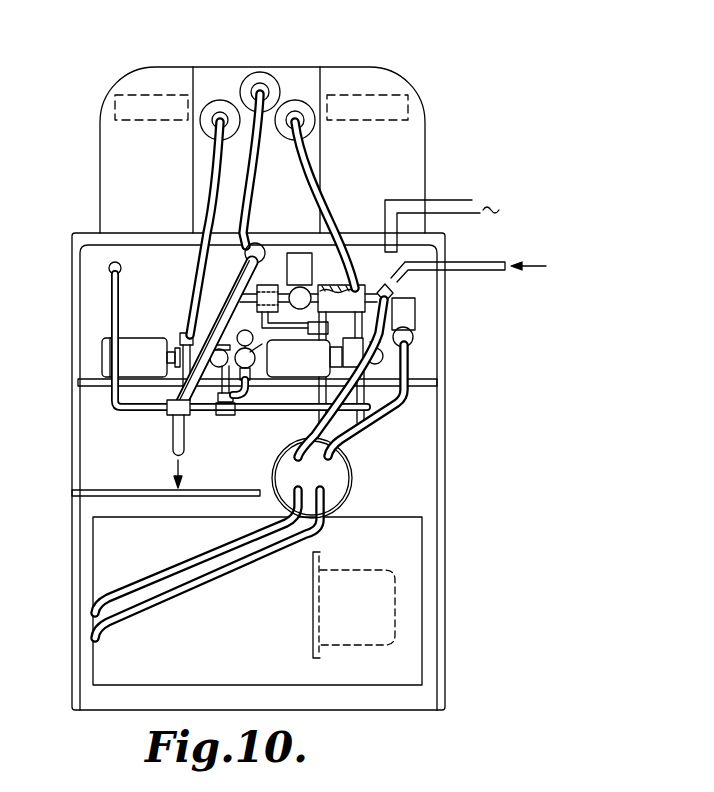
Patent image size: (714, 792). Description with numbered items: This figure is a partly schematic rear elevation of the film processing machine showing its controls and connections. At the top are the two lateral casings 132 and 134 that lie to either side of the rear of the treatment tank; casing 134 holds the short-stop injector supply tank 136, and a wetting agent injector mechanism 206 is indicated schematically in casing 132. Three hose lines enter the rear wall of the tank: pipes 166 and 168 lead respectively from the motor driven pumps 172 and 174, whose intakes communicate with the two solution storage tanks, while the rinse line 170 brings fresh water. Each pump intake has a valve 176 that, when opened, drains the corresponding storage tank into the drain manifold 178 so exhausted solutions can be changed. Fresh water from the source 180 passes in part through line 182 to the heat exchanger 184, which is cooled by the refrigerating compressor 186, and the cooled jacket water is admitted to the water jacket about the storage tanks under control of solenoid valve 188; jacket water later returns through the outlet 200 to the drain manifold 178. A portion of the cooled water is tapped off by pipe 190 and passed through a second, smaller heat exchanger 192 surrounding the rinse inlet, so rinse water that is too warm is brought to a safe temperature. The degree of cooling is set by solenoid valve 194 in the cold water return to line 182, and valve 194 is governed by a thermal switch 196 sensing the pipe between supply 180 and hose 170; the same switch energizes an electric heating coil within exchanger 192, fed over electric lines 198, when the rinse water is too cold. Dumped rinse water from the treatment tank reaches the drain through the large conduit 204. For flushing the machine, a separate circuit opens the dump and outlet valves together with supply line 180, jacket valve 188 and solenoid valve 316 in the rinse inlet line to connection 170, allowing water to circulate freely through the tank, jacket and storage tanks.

The lateral casing 132 is at (426, 126).
The lateral casing 134 is at (100, 133).
The supply tank 136 is at (130, 95).
The injector mechanism 206 is at (398, 93).
The pipe 166 is at (213, 176).
The pipe 168 is at (317, 178).
The rinse line 170 is at (249, 186).
The motor driven pump 172 is at (182, 332).
The motor driven pump 174 is at (340, 354).
The valve 176 is at (224, 347).
The drain manifold 178 is at (175, 431).
The source of fresh water 180 is at (490, 262).
The line 182 is at (307, 429).
The heat exchanger 184 is at (338, 478).
The refrigerating compressor 186 is at (272, 623).
The solenoid valve 188 is at (415, 316).
The pipe 190 is at (367, 402).
The second heat exchanger 192 is at (378, 288).
The solenoid valve 194 is at (310, 323).
The thermal switch 196 is at (268, 245).
The electric lines 198 is at (460, 206).
The outlet 200 is at (122, 268).
The large conduit 204 is at (217, 300).
The solenoid valve 316 is at (315, 247).